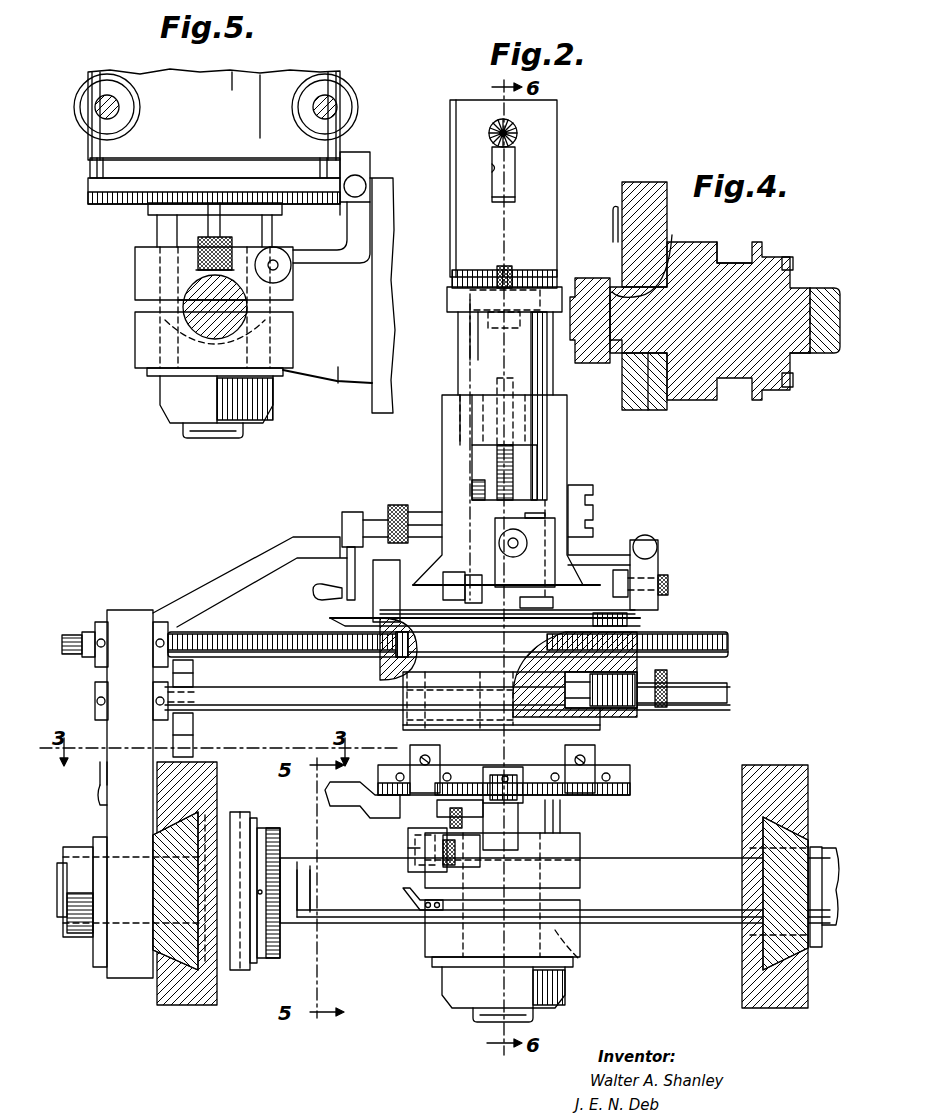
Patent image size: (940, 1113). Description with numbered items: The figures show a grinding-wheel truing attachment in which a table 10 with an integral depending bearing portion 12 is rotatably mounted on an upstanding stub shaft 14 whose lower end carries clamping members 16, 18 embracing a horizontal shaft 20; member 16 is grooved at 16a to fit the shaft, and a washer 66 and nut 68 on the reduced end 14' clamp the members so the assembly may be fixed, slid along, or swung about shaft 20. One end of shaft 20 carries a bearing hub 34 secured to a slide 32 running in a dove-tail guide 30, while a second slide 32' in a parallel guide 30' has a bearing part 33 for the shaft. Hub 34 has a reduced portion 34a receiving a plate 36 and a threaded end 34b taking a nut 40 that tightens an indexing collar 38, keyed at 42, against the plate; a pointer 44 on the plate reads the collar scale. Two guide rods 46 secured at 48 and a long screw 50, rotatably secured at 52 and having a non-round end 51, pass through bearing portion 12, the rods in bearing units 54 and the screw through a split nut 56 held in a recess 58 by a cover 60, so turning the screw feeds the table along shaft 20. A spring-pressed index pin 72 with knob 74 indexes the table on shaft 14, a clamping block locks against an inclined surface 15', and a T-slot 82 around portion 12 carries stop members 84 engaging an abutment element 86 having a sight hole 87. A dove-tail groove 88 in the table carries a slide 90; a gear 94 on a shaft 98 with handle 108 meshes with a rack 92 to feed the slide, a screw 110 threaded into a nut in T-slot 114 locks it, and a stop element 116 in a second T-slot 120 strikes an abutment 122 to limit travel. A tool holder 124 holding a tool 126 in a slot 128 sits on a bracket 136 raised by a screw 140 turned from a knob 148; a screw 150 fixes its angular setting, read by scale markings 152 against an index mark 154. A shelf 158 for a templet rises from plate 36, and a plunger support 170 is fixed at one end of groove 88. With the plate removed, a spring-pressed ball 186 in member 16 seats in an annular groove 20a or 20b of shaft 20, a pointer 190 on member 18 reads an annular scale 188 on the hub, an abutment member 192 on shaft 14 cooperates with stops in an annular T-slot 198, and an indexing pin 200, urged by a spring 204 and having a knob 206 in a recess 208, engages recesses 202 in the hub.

In FIG. 2, the table 10 is at (565, 565).
In FIG. 5, the depending bearing portion 12 is at (277, 82).
In FIG. 2, the depending bearing portion 12 is at (610, 622).
In FIG. 5, the upstanding shaft 14 is at (232, 225).
In FIG. 2, the upstanding shaft 14 is at (552, 826).
In FIG. 5, the reduced lower end of shaft 14' is at (195, 438).
In FIG. 2, the reduced lower end of shaft 14' is at (473, 1023).
In FIG. 2, the inclined annular surface 15' is at (574, 674).
In FIG. 5, the upper clamping member 16 is at (137, 262).
In FIG. 2, the upper clamping member 16 is at (580, 863).
In FIG. 5, the groove 16a is at (200, 252).
In FIG. 5, the lower clamping member 18 is at (145, 348).
In FIG. 2, the lower clamping member 18 is at (560, 940).
In FIG. 5, the horizontally disposed shaft 20 is at (228, 322).
In FIG. 4, the horizontally disposed shaft 20 is at (826, 300).
In FIG. 2, the horizontally disposed shaft 20 is at (682, 870).
In FIG. 4, the annular groove 20a is at (822, 355).
In FIG. 2, the annular groove 20a is at (305, 925).
In FIG. 2, the additional annular groove 20b is at (572, 952).
In FIG. 2, the dove-tail guide 30 is at (204, 883).
In FIG. 5, the dove-tail guide 30' is at (370, 310).
In FIG. 2, the dove-tail guide 30' is at (781, 869).
In FIG. 2, the slide member 32 is at (134, 923).
In FIG. 5, the slide 32' is at (327, 404).
In FIG. 2, the slide 32' is at (793, 882).
In FIG. 5, the bearing part 33 is at (152, 375).
In FIG. 2, the bearing part 33 is at (812, 947).
In FIG. 4, the bearing hub 34 is at (693, 380).
In FIG. 2, the bearing hub 34 is at (240, 960).
In FIG. 4, the reduced outer portion of hub 34a is at (648, 402).
In FIG. 4, the reduced extreme end portion of hub 34b is at (606, 342).
In FIG. 2, the reduced extreme end portion of hub 34b is at (58, 865).
In FIG. 4, the plate 36 is at (647, 185).
In FIG. 2, the plate 36 is at (107, 768).
In FIG. 4, the indexing collar 38 is at (616, 372).
In FIG. 2, the indexing collar 38 is at (98, 960).
In FIG. 4, the nut 40 is at (585, 282).
In FIG. 2, the nut 40 is at (80, 922).
In FIG. 4, the key 42 is at (672, 240).
In FIG. 4, the indicating pointer 44 is at (610, 238).
In FIG. 2, the indicating pointer 44 is at (99, 795).
In FIG. 5, the guide rods 46 is at (104, 100).
In FIG. 2, the guide rods 46 is at (248, 706).
In FIG. 2, the securement of guide rods 48 is at (98, 702).
In FIG. 2, the screw 50 is at (257, 636).
In FIG. 2, the non-round end of screw 51 is at (72, 632).
In FIG. 2, the rotatable securement of screw 52 is at (100, 625).
In FIG. 2, the bearing units 54 is at (420, 692).
In FIG. 2, the split nut 56 is at (375, 637).
In FIG. 2, the recess 58 is at (378, 680).
In FIG. 2, the recess cover 60 is at (375, 668).
In FIG. 2, the washer 66 is at (435, 960).
In FIG. 5, the nut 68 is at (273, 400).
In FIG. 2, the nut 68 is at (445, 990).
In FIG. 2, the index pin 72 is at (620, 706).
In FIG. 2, the knob 74 is at (670, 688).
In FIG. 2, the T-slot 82 is at (630, 785).
In FIG. 5, the stop-members 84 is at (343, 158).
In FIG. 2, the stop-members 84 is at (585, 775).
In FIG. 5, the abutment element 86 is at (360, 265).
In FIG. 2, the abutment element 86 is at (560, 815).
In FIG. 2, the hole 87 is at (503, 768).
In FIG. 2, the dove-tail groove 88 is at (590, 492).
In FIG. 2, the dove-tail slide 90 is at (560, 480).
In FIG. 2, the gear rack 92 is at (443, 580).
In FIG. 2, the gear 94 is at (472, 487).
In FIG. 2, the shaft 98 is at (342, 528).
In FIG. 2, the handle 108 is at (340, 580).
In FIG. 2, the long screw 110 is at (520, 460).
In FIG. 2, the longitudinal T-slot 114 is at (600, 604).
In FIG. 2, the stop element 116 is at (657, 545).
In FIG. 2, the second T-slot 120 is at (660, 580).
In FIG. 2, the abutment 122 is at (600, 568).
In FIG. 2, the tool holder 124 is at (448, 233).
In FIG. 2, the tool 126 is at (489, 135).
In FIG. 2, the slot 128 is at (492, 170).
In FIG. 2, the bracket 136 is at (470, 347).
In FIG. 2, the vertical adjusting screw 140 is at (510, 477).
In FIG. 2, the knob 148 is at (392, 505).
In FIG. 2, the screw 150 is at (486, 320).
In FIG. 2, the scale markings 152 is at (462, 278).
In FIG. 2, the index mark 154 is at (447, 297).
In FIG. 2, the shelf 158 is at (196, 595).
In FIG. 2, the support 170 is at (495, 565).
In FIG. 5, the spring-pressed ball 186 is at (200, 272).
In FIG. 2, the annular scale 188 is at (270, 835).
In FIG. 2, the indicating pointer 190 is at (418, 905).
In FIG. 5, the abutment member 192 is at (214, 200).
In FIG. 2, the abutment member 192 is at (334, 800).
In FIG. 4, the annular T-slot 198 is at (740, 255).
In FIG. 5, the indexing pin 200 is at (290, 270).
In FIG. 2, the indexing pin 200 is at (400, 850).
In FIG. 4, the recesses 202 is at (790, 257).
In FIG. 2, the spring 204 is at (410, 870).
In FIG. 2, the knob 206 is at (455, 862).
In FIG. 2, the recess 208 is at (467, 819).